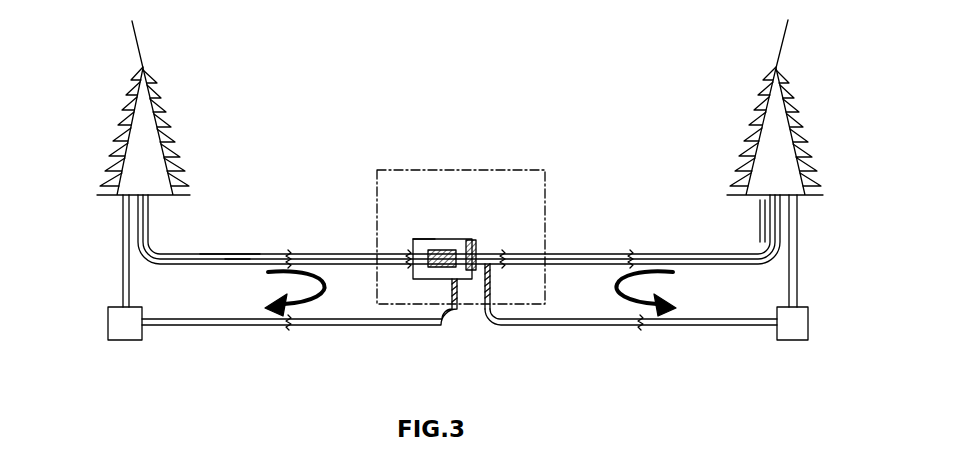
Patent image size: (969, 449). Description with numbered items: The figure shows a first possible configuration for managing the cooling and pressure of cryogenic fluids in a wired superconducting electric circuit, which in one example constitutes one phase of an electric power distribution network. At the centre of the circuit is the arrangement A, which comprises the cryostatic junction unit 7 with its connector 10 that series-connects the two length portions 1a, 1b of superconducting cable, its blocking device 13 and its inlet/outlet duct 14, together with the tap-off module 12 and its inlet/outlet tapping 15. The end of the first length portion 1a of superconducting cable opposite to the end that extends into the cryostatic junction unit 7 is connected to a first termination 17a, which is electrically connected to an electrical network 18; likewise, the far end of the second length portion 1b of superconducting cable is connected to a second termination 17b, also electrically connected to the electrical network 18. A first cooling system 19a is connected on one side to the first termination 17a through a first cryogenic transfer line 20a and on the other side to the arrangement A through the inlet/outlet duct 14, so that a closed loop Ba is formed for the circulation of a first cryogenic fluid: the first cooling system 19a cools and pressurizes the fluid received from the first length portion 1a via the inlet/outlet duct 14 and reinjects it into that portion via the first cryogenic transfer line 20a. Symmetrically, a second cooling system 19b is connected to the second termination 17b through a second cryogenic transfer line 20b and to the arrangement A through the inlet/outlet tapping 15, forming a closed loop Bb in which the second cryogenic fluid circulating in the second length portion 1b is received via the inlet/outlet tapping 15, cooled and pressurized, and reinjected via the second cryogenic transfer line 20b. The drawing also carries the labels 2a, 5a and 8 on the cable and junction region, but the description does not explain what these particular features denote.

The first length portion of superconducting cable 1a is at (274, 246).
The second length portion of superconducting cable 1b is at (663, 246).
The pipe 2a is at (235, 258).
The pipe jacket 5a is at (218, 253).
The cryostatic junction unit 7 is at (408, 232).
The housing wall 8 is at (427, 239).
The connector 10 is at (443, 250).
The tap-off module 12 is at (487, 254).
The blocking device 13 is at (468, 240).
The inlet/outlet duct 14 is at (326, 326).
The inlet/outlet tapping 15 is at (605, 326).
The first termination 17a is at (130, 163).
The second termination 17b is at (805, 145).
The electrical network 18 is at (779, 43).
The first cooling system 19a is at (108, 323).
The second cooling system 19b is at (808, 323).
The first cryogenic transfer line 20a is at (123, 278).
The second cryogenic transfer line 20b is at (797, 278).
The arrangement A is at (402, 165).
The closed loop Ba is at (269, 293).
The closed loop Bb is at (669, 293).